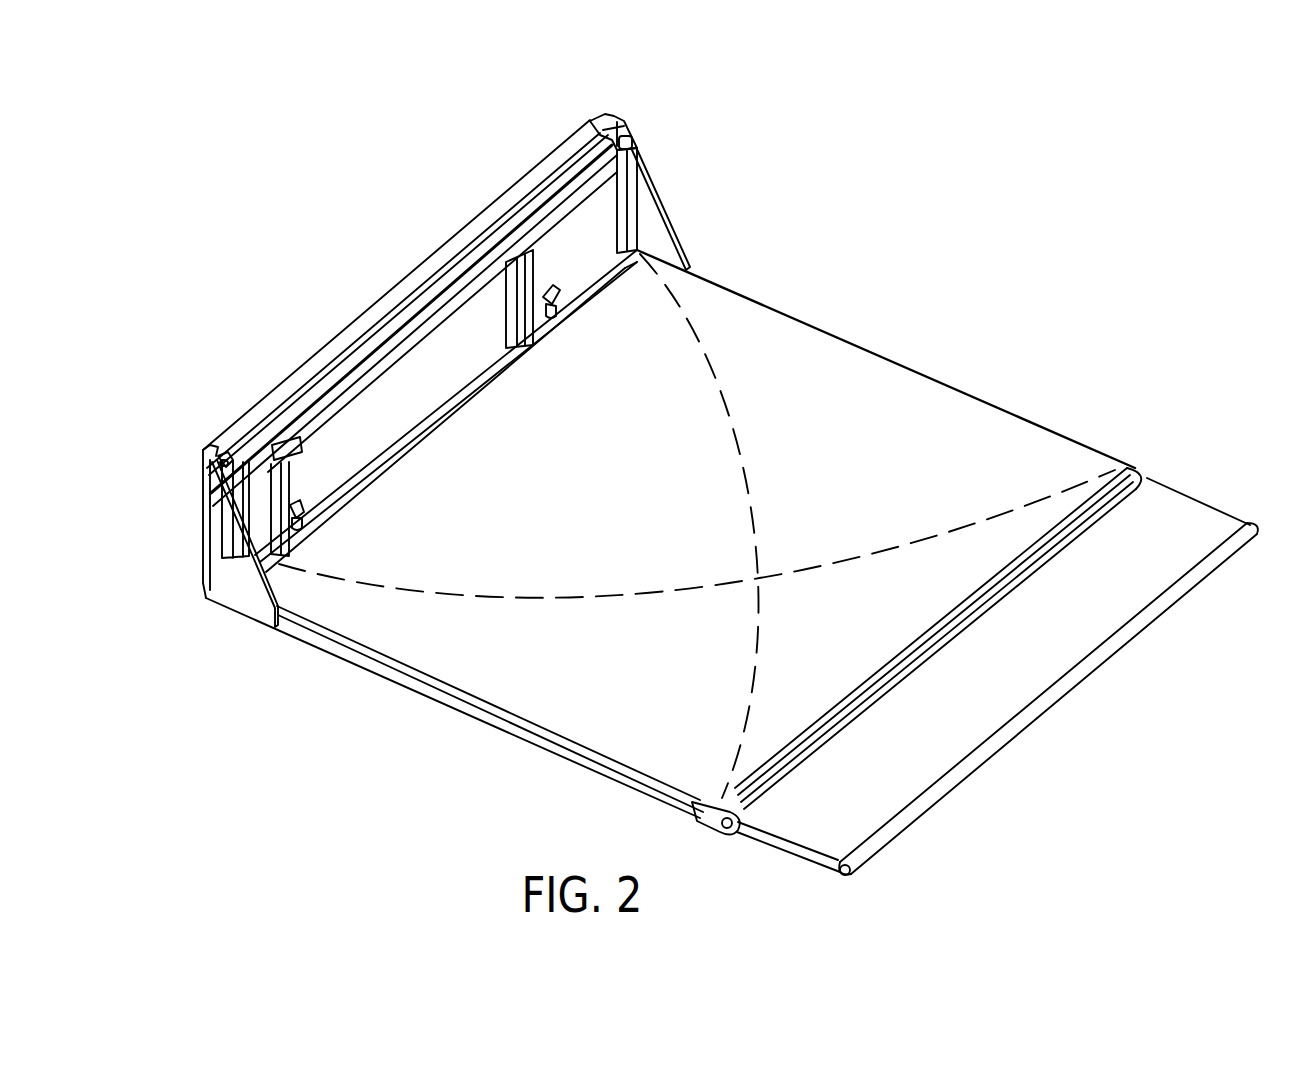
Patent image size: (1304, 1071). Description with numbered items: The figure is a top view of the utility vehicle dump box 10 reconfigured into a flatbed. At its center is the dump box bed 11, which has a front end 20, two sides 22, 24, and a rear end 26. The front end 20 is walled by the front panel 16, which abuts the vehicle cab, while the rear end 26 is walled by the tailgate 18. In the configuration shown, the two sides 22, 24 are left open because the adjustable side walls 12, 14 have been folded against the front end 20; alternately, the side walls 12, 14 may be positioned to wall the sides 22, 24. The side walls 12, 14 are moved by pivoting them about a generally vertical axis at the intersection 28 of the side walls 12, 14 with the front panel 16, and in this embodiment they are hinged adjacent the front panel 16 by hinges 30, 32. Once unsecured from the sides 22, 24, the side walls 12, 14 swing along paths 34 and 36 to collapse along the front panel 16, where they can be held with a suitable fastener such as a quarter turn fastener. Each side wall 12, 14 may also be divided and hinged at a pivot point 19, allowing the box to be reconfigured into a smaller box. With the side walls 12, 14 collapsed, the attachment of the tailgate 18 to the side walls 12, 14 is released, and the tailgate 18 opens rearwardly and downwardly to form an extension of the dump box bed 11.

The utility vehicle dump box 10 is at (845, 173).
The dump box bed 11 is at (525, 673).
The first side wall 12 is at (262, 477).
The second side wall 14 is at (587, 232).
The front panel 16 is at (432, 258).
The tailgate 18 is at (1020, 672).
The pivot point 19 is at (522, 258).
The front end 20 is at (655, 187).
The first side 22 is at (405, 677).
The second side 24 is at (838, 337).
The rear end 26 is at (1140, 462).
The intersection 28 is at (615, 112).
The hinge 30 is at (225, 460).
The hinge 32 is at (627, 147).
The path 34 is at (737, 757).
The path 36 is at (1035, 502).